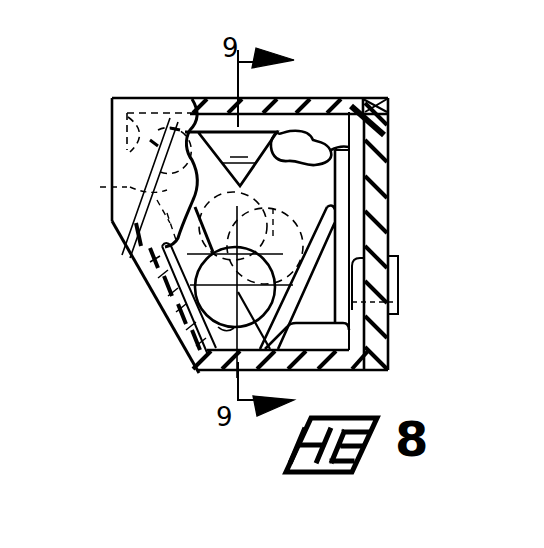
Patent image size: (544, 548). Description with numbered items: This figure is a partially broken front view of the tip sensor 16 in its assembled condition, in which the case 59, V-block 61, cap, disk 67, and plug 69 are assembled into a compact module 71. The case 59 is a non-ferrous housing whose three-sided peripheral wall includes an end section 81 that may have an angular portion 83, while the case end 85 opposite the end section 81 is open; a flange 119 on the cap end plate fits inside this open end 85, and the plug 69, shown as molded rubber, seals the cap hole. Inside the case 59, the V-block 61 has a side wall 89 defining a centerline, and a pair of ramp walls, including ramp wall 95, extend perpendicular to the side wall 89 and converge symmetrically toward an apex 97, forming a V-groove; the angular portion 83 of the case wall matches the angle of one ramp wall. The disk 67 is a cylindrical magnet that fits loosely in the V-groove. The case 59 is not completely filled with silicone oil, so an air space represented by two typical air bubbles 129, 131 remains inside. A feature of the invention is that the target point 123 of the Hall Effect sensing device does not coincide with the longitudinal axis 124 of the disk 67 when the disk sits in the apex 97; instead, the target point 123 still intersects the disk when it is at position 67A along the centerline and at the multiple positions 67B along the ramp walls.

The tip sensor 16 is at (414, 163).
The case 59 is at (108, 137).
The V-block 61 is at (289, 106).
The disk 67 is at (196, 335).
The disk position 67A is at (136, 190).
The disk positions 67B is at (310, 202).
The plug 69 is at (400, 268).
The compact module 71 is at (162, 292).
The end section 81 is at (143, 102).
The angular portion 83 is at (160, 286).
The case end 85 is at (374, 103).
The side wall 89 is at (337, 176).
The ramp wall 95 is at (333, 216).
The apex 97 is at (203, 366).
The flange 119 is at (366, 114).
The target point 123 is at (240, 255).
The longitudinal axis 124 is at (282, 358).
The air bubble 129 is at (203, 137).
The air bubble 131 is at (305, 148).